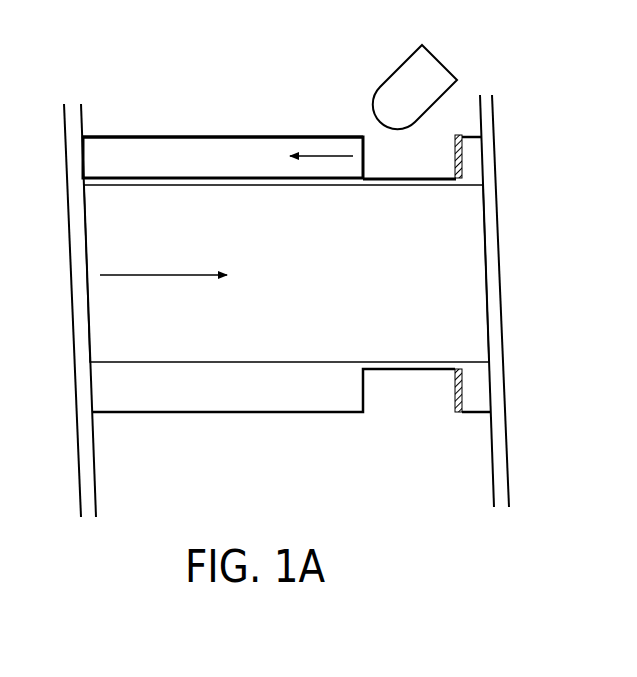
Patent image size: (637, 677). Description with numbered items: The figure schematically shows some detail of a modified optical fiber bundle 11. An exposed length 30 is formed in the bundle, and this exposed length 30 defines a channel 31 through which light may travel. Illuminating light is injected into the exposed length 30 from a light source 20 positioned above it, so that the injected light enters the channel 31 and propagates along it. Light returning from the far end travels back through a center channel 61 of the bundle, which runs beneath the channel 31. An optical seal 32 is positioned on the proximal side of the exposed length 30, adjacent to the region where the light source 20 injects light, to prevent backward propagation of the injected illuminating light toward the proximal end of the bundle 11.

The optical fiber bundle 11 is at (180, 136).
The light source 20 is at (447, 42).
The exposed length 30 is at (430, 174).
The channel 31 is at (223, 157).
The optical seal 32 is at (442, 136).
The center channel 61 is at (286, 273).